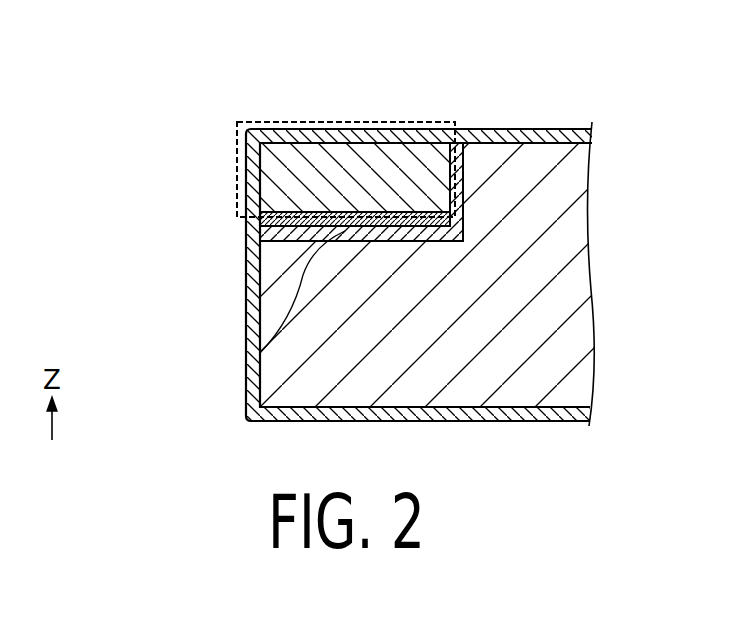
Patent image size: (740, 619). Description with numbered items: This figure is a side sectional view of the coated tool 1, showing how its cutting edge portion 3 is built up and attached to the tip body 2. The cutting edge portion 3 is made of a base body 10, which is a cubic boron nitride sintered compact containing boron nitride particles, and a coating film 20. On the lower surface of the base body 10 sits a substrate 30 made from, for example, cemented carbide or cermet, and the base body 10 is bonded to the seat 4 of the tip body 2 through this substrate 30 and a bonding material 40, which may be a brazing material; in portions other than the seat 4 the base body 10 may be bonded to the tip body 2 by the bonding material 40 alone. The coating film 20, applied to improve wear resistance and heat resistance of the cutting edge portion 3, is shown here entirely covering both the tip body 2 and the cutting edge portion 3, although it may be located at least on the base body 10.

The coated tool 1 is at (622, 53).
The tip body 2 is at (523, 183).
The cutting edge portion 3 is at (277, 121).
The seat 4 is at (245, 352).
The base body 10 is at (337, 183).
The coating film 20 is at (400, 142).
The substrate 30 is at (283, 216).
The bonding material 40 is at (278, 232).